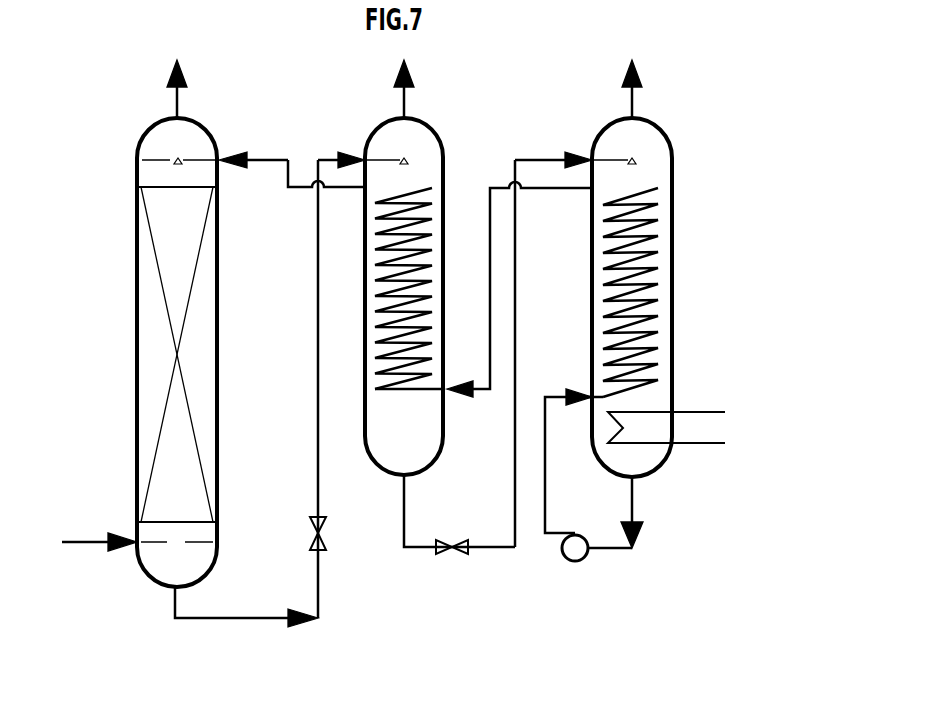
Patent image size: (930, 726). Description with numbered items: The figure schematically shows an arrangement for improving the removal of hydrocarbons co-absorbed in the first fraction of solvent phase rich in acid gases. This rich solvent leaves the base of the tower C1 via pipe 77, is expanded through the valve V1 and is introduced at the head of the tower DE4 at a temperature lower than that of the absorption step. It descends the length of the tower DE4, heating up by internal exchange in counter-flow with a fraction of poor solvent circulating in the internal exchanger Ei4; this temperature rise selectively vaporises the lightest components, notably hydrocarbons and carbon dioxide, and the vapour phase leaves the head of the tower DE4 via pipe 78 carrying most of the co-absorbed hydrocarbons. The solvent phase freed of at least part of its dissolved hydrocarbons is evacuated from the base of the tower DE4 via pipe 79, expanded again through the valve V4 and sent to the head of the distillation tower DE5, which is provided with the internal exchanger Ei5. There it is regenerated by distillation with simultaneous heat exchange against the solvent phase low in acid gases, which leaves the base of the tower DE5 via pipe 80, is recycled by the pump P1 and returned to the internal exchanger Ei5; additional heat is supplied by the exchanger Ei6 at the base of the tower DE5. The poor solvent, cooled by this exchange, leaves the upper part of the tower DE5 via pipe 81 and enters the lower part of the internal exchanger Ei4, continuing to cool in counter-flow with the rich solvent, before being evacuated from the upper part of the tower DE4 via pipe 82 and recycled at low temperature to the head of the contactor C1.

The pipe 77 is at (221, 618).
The pipe 78 is at (406, 102).
The pipe 79 is at (400, 550).
The pipe 80 is at (614, 550).
The pipe 81 is at (538, 192).
The pipe 82 is at (259, 155).
The tower (contactor) C1 is at (137, 305).
The tower DE4 is at (443, 445).
The distillation tower DE5 is at (673, 215).
The internal exchanger Ei4 is at (436, 211).
The internal exchanger Ei5 is at (658, 305).
The exchanger Ei6 is at (664, 411).
The valve V1 is at (337, 385).
The valve V4 is at (452, 534).
The pump P1 is at (571, 475).